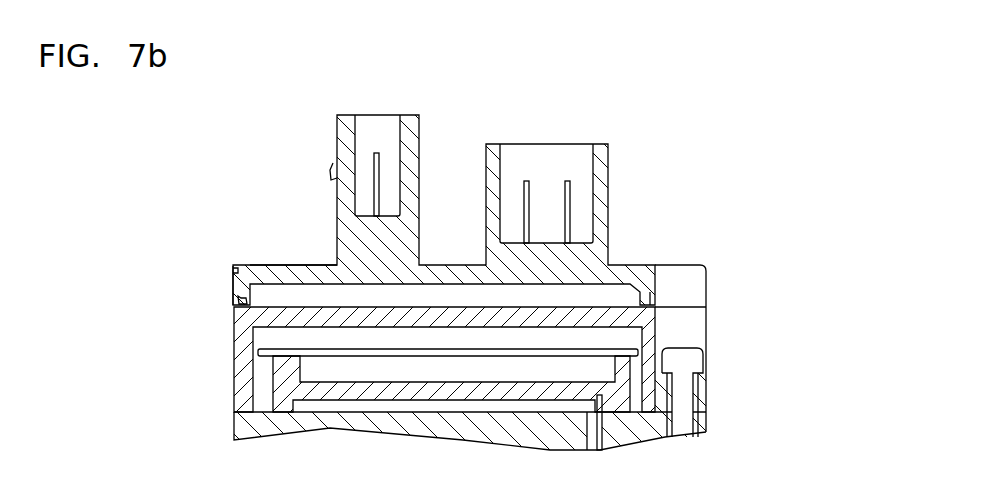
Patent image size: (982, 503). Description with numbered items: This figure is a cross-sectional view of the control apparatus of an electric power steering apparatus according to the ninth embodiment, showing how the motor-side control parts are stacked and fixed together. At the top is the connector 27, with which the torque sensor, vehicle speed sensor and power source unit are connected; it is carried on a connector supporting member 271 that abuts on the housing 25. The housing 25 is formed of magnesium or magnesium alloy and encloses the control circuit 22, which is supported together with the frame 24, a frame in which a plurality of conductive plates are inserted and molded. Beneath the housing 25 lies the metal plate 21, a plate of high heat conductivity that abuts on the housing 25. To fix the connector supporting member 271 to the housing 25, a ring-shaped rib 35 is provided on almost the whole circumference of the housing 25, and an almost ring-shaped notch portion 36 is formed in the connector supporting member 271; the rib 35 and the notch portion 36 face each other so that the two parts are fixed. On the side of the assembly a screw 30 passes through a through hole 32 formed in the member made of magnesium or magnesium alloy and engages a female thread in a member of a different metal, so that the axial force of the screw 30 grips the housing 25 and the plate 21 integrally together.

The metal plate 21 is at (243, 432).
The control circuit 22 is at (598, 348).
The frame 24 is at (290, 387).
The housing 25 is at (243, 358).
The connector 27 is at (367, 146).
The connector supporting member 271 is at (287, 264).
The screw 30 is at (692, 363).
The through hole 32 is at (698, 428).
The ring-shaped rib 35 is at (240, 303).
The notch portion 36 is at (234, 293).